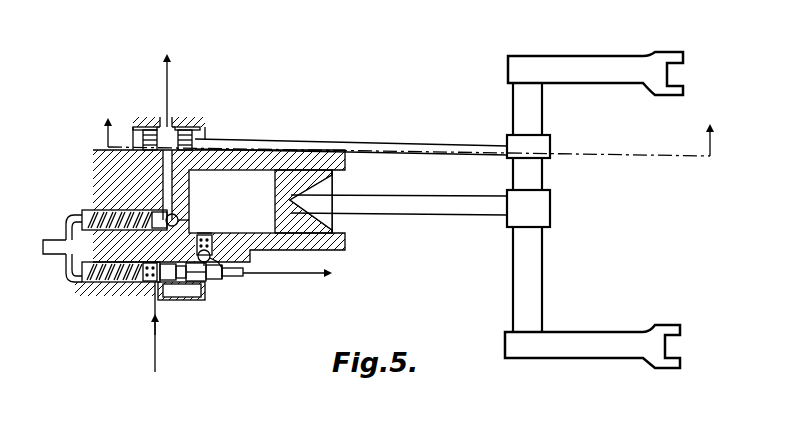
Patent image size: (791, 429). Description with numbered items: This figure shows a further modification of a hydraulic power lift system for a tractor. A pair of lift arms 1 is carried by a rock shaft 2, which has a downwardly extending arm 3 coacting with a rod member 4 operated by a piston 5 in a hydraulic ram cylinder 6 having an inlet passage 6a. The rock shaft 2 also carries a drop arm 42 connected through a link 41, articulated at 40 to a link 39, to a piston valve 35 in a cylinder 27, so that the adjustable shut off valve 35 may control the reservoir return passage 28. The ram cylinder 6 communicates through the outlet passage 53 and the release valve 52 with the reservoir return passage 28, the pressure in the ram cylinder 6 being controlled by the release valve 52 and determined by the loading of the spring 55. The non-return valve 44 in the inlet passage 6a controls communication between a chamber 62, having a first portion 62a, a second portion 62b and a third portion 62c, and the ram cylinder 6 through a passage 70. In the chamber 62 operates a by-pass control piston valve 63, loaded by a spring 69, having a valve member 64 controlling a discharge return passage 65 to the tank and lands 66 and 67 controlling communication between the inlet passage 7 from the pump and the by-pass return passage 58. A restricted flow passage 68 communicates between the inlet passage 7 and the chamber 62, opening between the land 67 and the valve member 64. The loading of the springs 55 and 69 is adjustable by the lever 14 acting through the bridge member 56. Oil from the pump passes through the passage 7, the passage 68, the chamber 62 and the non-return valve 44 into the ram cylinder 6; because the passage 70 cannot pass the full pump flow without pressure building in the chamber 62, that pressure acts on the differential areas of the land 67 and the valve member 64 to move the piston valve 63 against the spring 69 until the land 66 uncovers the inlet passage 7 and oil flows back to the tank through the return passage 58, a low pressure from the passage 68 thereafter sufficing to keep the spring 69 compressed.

The lift arms 1 is at (576, 63).
The rock shaft 2 is at (543, 119).
The downwardly extending arm 3 is at (543, 207).
The rod member 4 is at (418, 208).
The piston 5 is at (292, 170).
The hydraulic ram cylinder 6 is at (202, 234).
The inlet passage 6a is at (228, 266).
The inlet passage 7 is at (152, 300).
The lever 14 is at (52, 241).
The cylinder 27 is at (140, 133).
The reservoir return passage 28 is at (166, 122).
The piston valve 35 is at (196, 130).
The link 39 is at (322, 144).
The articulation 40 is at (370, 146).
The link 41 is at (416, 149).
The drop arm 42 is at (550, 147).
The non-return valve 44 is at (218, 256).
The release valve 52 is at (178, 214).
The outlet passage 53 is at (204, 217).
The spring 55 is at (115, 210).
The bridge member 56 is at (72, 228).
The by-pass return passage 58 is at (96, 296).
The chamber 62 is at (200, 282).
The first portion 62a is at (160, 215).
The second portion 62b is at (178, 284).
The third portion 62c is at (240, 278).
The piston valve 63 is at (196, 300).
The valve member 64 is at (212, 280).
The discharge return passage 65 is at (232, 276).
The land 66 is at (95, 290).
The land 67 is at (130, 300).
The restricted flow passage 68 is at (165, 300).
The spring 69 is at (84, 280).
The passage 70 is at (212, 246).